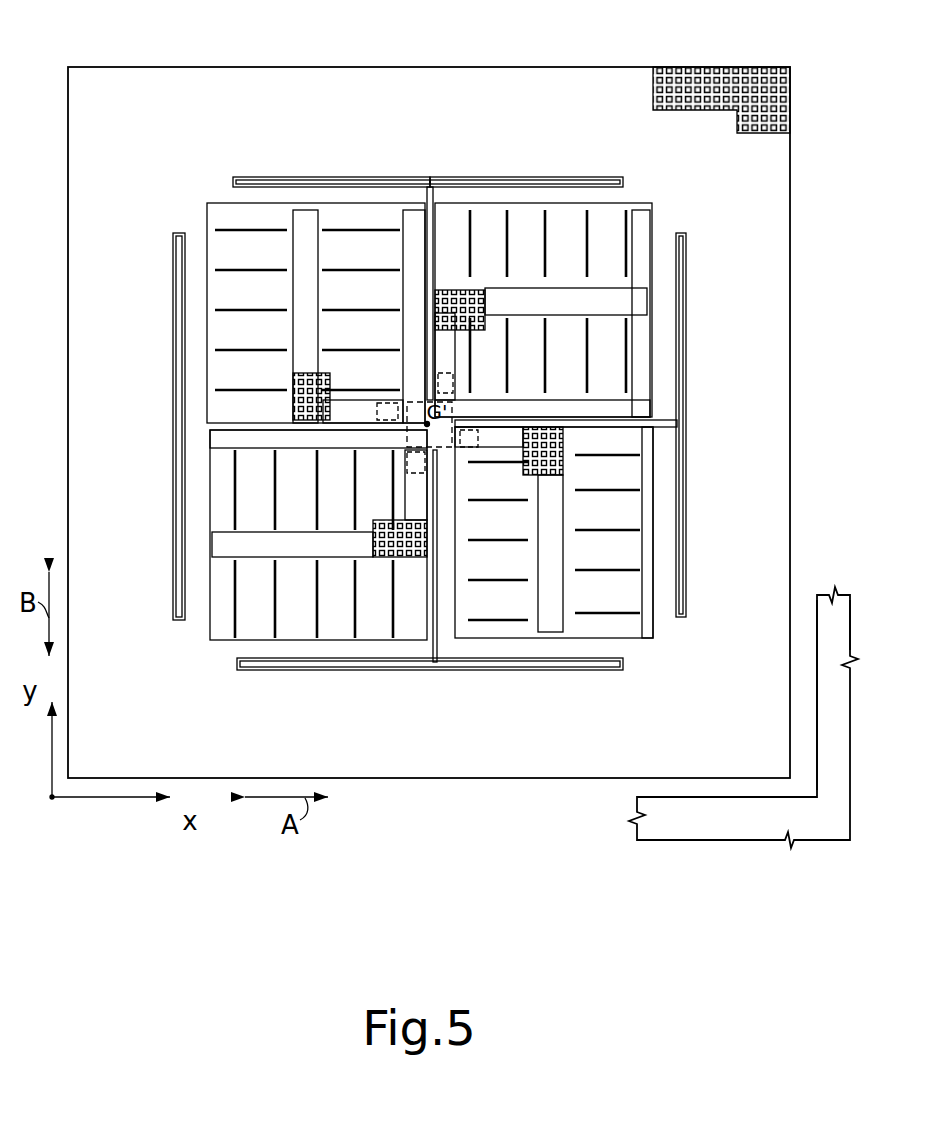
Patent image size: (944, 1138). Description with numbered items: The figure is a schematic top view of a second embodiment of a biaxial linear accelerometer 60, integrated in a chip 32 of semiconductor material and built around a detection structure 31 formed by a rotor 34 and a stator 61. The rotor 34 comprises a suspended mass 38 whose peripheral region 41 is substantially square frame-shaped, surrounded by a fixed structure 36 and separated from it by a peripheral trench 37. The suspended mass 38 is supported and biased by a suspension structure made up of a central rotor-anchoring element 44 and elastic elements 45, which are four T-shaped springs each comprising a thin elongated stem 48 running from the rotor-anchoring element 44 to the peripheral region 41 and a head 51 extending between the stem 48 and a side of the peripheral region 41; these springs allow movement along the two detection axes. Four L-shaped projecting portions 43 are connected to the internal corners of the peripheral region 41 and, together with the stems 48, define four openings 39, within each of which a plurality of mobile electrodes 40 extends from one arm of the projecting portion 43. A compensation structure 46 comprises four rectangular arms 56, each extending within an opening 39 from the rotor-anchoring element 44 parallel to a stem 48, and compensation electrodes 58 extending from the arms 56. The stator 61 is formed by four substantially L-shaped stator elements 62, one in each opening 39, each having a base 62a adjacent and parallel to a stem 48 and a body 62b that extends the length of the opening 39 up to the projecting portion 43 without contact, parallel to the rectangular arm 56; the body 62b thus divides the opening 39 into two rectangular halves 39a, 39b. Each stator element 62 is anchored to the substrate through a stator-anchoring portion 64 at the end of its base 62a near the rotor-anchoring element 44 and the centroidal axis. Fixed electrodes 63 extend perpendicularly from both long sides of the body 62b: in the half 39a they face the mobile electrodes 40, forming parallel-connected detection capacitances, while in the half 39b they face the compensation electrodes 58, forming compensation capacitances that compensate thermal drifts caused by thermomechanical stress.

The detection structure 31 is at (486, 64).
The chip 32 is at (856, 646).
The rotor 34 is at (66, 432).
The fixed structure 36 is at (830, 743).
The peripheral trench 37 is at (812, 648).
The suspended mass 38 is at (155, 280).
The opening 39 is at (208, 502).
The first rectangular half of the opening 39a is at (634, 230).
The second rectangular half of the opening 39b is at (625, 357).
The mobile electrode 40 is at (632, 208).
The peripheral region 41 is at (784, 523).
The projecting portion 43 is at (637, 658).
The rotor-anchoring element 44 is at (393, 562).
The elastic element 45 is at (573, 175).
The compensation structure 46 is at (636, 407).
The stem 48 is at (443, 281).
The head 51 is at (283, 177).
The rectangular arm 56 is at (440, 620).
The compensation electrode 58 is at (498, 622).
The biaxial accelerometer 60 is at (820, 102).
The stator 61 is at (432, 225).
The stator element 62 is at (640, 298).
The base 62a is at (493, 437).
The body 62b is at (548, 620).
The fixed electrode 63 is at (630, 222).
The stator-anchoring portion 64 is at (470, 428).